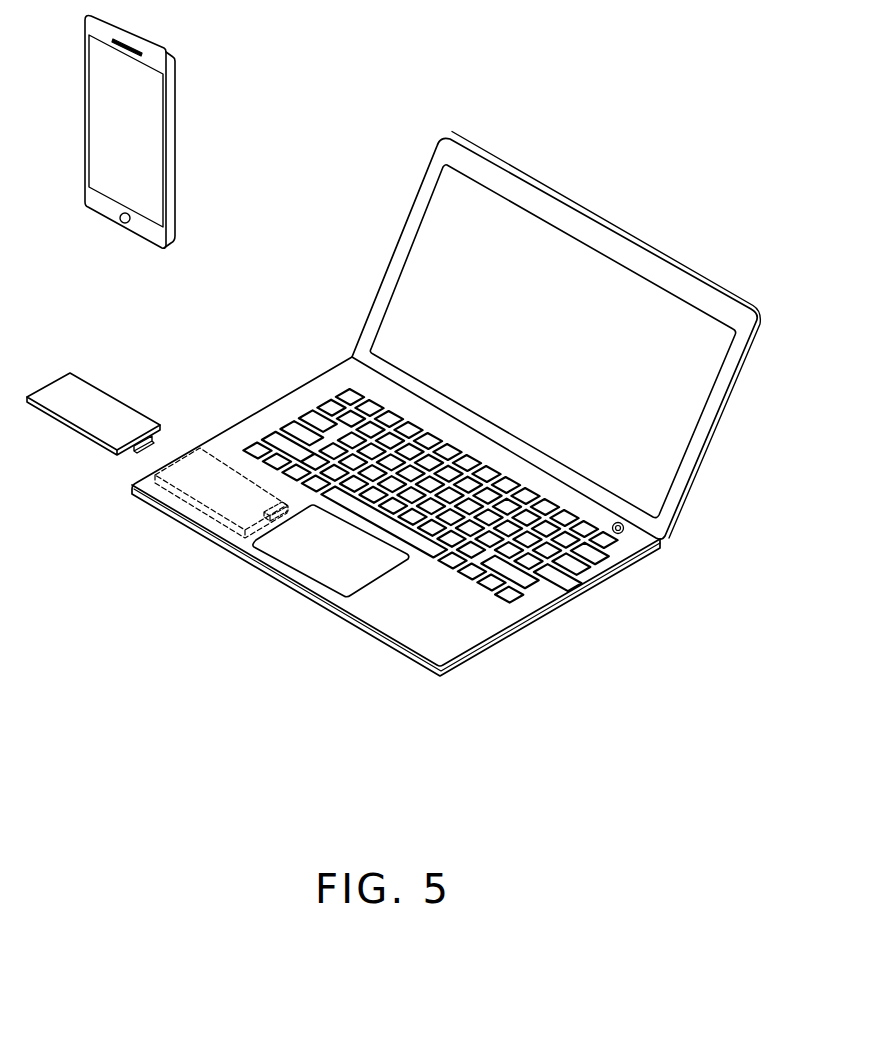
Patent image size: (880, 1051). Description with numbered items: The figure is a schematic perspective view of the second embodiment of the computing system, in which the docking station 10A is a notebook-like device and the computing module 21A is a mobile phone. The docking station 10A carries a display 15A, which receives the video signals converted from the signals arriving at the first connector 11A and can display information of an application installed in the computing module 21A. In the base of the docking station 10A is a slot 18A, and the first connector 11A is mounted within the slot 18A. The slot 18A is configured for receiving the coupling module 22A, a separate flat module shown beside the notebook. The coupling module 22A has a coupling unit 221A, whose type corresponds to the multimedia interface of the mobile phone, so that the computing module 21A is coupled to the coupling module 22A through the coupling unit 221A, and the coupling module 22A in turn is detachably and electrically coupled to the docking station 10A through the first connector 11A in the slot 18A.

The docking station 10A is at (547, 208).
The first connector 11A is at (272, 537).
The display 15A is at (432, 285).
The slot 18A is at (192, 493).
The computing module 21A is at (157, 52).
The coupling module 22A is at (77, 395).
The coupling unit 221A is at (137, 448).